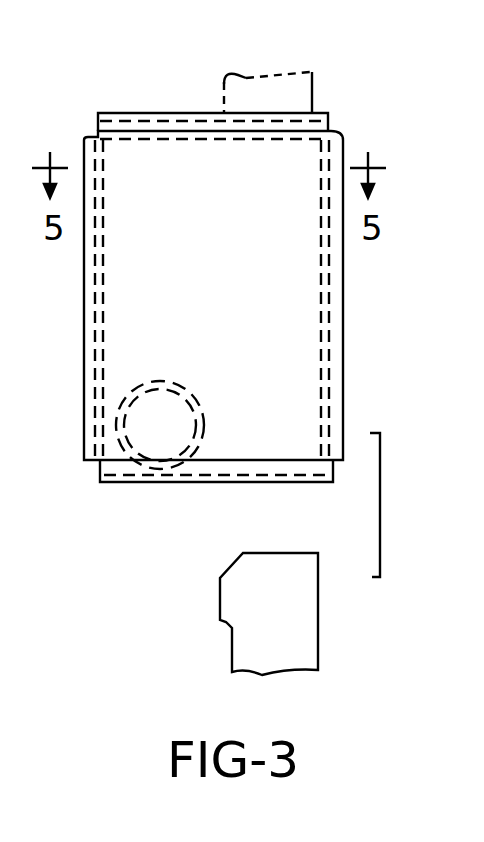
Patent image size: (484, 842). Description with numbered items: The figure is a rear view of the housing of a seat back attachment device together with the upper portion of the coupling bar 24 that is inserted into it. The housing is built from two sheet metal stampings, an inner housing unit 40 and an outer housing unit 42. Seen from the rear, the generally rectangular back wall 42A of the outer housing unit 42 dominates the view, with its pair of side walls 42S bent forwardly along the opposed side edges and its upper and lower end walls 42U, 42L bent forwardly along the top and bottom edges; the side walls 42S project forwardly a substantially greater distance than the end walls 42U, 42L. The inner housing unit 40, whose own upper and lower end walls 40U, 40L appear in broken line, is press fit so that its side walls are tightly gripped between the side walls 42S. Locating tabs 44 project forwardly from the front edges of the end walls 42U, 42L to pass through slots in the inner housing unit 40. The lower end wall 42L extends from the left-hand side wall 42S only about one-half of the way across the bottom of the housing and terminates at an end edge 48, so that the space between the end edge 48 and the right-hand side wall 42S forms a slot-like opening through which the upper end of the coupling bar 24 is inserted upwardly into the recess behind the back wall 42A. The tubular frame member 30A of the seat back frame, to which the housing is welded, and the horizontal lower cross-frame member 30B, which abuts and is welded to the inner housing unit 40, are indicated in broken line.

The coupling bar 24 is at (226, 622).
The frame member 30A is at (318, 74).
The lower cross-frame member 30B is at (150, 382).
The inner housing unit 40 is at (92, 132).
The upper end wall 40U is at (186, 113).
The lower end wall 40L is at (118, 482).
The outer housing unit 42 is at (84, 293).
The back wall 42A is at (270, 273).
The side walls 42S is at (84, 348).
The upper end wall 42U is at (292, 128).
The lower end wall 42L is at (200, 482).
The locating tabs 44 is at (170, 143).
The end edge 48 is at (220, 460).